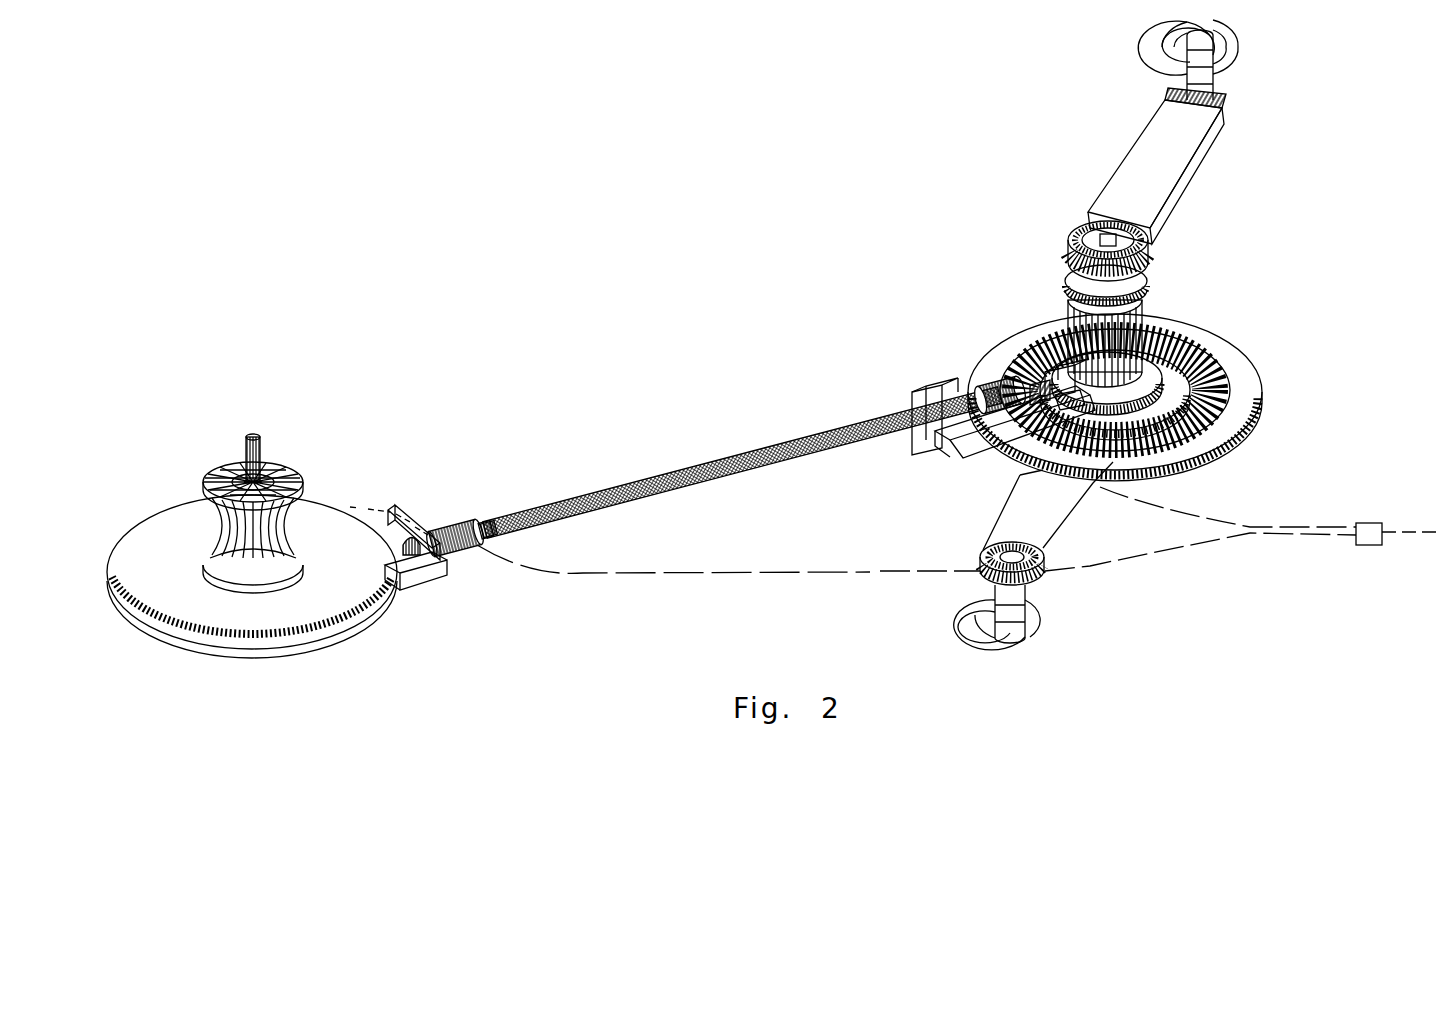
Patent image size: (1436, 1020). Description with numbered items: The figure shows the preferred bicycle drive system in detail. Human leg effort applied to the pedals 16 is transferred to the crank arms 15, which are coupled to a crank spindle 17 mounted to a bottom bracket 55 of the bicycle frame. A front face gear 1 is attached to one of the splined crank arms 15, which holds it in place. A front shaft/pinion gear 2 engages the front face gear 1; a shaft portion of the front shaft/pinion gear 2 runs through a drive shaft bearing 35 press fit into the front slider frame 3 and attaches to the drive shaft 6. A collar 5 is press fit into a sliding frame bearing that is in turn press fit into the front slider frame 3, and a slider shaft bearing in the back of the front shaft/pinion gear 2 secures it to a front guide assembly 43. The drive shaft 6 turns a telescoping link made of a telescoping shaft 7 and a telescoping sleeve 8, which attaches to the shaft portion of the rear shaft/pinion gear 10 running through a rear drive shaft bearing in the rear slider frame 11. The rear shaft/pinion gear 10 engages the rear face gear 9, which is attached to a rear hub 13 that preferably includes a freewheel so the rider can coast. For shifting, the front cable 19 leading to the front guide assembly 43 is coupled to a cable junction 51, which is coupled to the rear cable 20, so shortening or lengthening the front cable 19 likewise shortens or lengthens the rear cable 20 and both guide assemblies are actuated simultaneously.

The front face gear 1 is at (1256, 341).
The front shaft/pinion gear 2 is at (987, 380).
The front slider frame 3 is at (921, 370).
The collar 5 is at (1157, 347).
The drive shaft 6 is at (757, 440).
The telescoping shaft 7 is at (483, 527).
The telescoping sleeve 8 is at (450, 527).
The rear face gear 9 is at (363, 632).
The rear shaft/pinion gear 10 is at (403, 547).
The rear slider frame 11 is at (432, 580).
The rear hub 13 is at (291, 456).
The crank arms 15 is at (1113, 167).
The pedals 16 is at (1235, 57).
The crank spindle 17 is at (1068, 262).
The front cable 19 is at (1435, 530).
The rear cable 20 is at (1310, 546).
The drive shaft bearing 35 is at (937, 430).
The front guide assembly 43 is at (1060, 405).
The cable junction 51 is at (1376, 512).
The bottom bracket 55 is at (1067, 297).